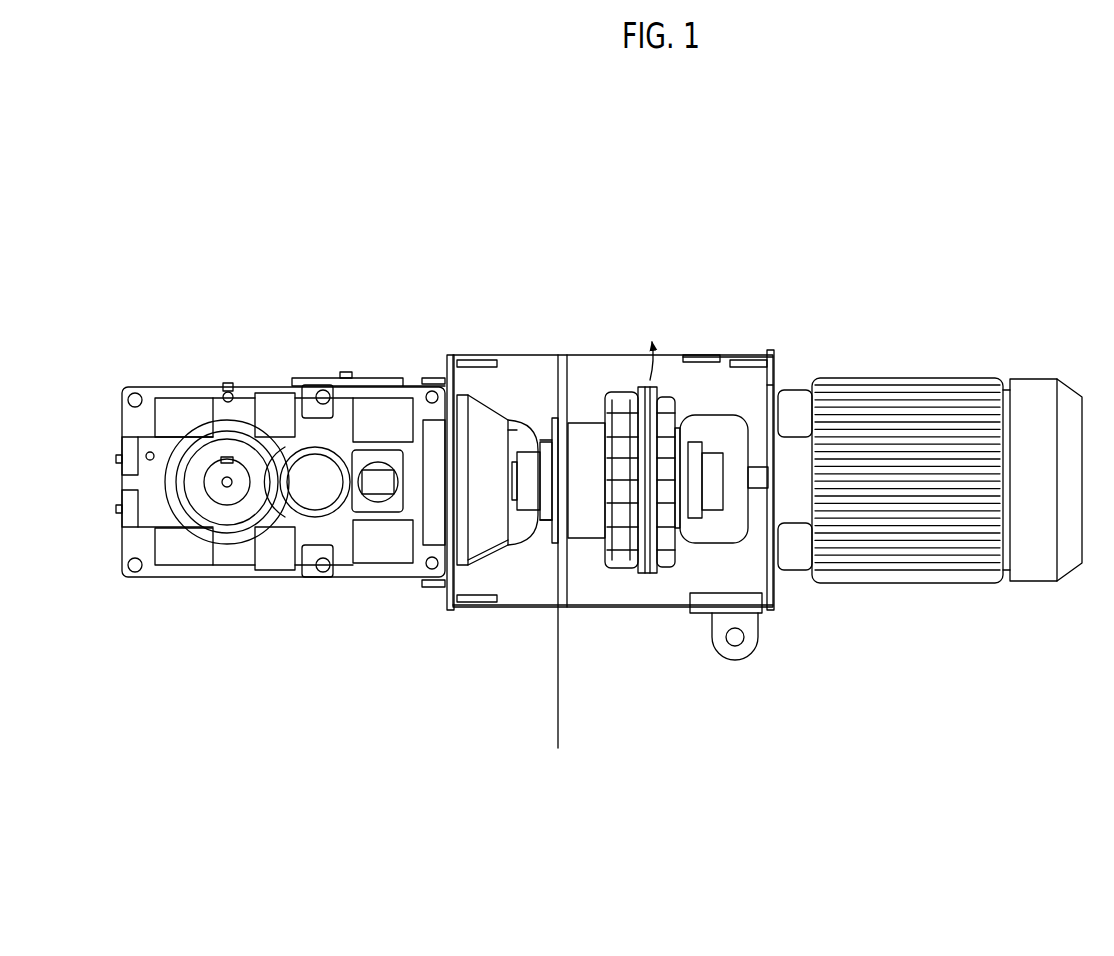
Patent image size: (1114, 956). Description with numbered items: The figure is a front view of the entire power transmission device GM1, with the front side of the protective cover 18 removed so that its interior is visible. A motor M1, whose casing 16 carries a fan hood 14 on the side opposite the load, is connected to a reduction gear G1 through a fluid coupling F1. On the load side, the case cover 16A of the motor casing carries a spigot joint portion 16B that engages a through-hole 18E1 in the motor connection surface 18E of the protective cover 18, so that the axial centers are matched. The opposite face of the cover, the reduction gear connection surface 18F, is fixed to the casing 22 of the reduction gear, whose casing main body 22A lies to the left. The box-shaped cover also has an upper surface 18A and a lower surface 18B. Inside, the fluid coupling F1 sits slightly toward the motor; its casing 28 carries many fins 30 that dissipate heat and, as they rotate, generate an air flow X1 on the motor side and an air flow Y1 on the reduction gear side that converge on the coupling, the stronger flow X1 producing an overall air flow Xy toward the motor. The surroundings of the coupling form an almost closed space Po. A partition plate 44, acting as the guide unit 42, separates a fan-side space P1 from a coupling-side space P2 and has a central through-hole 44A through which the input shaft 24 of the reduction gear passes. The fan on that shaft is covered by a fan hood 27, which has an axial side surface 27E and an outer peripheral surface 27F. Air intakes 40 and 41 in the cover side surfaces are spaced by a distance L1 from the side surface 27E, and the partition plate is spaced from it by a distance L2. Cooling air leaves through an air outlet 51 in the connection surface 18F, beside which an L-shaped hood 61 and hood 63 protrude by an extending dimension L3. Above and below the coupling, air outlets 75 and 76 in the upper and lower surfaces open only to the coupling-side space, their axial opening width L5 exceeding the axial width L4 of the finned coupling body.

The reduction gear G1 is at (303, 378).
The casing 22 is at (373, 377).
The casing main body 22A is at (410, 386).
The hood 61 is at (428, 378).
The hood 63 is at (433, 585).
The protective cover 18 is at (563, 352).
The reduction gear connection surface 18F is at (452, 356).
The upper surface 18A is at (722, 352).
The lower surface 18B is at (568, 606).
The motor connection surface 18E is at (772, 590).
The through-hole 18E1 is at (766, 537).
The fan hood 27 is at (500, 395).
The axial side surface 27E is at (515, 442).
The outer peripheral surface 27F is at (488, 565).
The input shaft 24 is at (515, 507).
The air outlet 51 is at (523, 437).
The partition plate 44 is at (563, 590).
The through-hole 44A is at (570, 528).
The guide unit 42 is at (540, 440).
The air intake 41 is at (518, 420).
The air intake 40 is at (516, 345).
The casing 28 is at (625, 390).
The fins 30 is at (622, 523).
The fluid coupling F1 is at (636, 386).
The space Po is at (648, 578).
The case cover 16A is at (738, 435).
The spigot joint portion 16B is at (768, 392).
The fan-side space P1 is at (498, 412).
The coupling-side space P2 is at (705, 408).
The air flow Xy is at (548, 377).
The air flow X1 is at (605, 592).
The air flow Y1 is at (702, 588).
The air outlet 75 is at (680, 352).
The air outlet 76 is at (785, 410).
The casing 16 is at (883, 377).
The motor M1 is at (911, 448).
The fan hood 14 is at (1037, 378).
The power transmission device GM1 is at (717, 288).
The distance L1 is at (540, 355).
The distance L2 is at (558, 740).
The extending dimension L3 is at (446, 587).
The axial width L4 is at (672, 607).
The axial opening width L5 is at (686, 357).